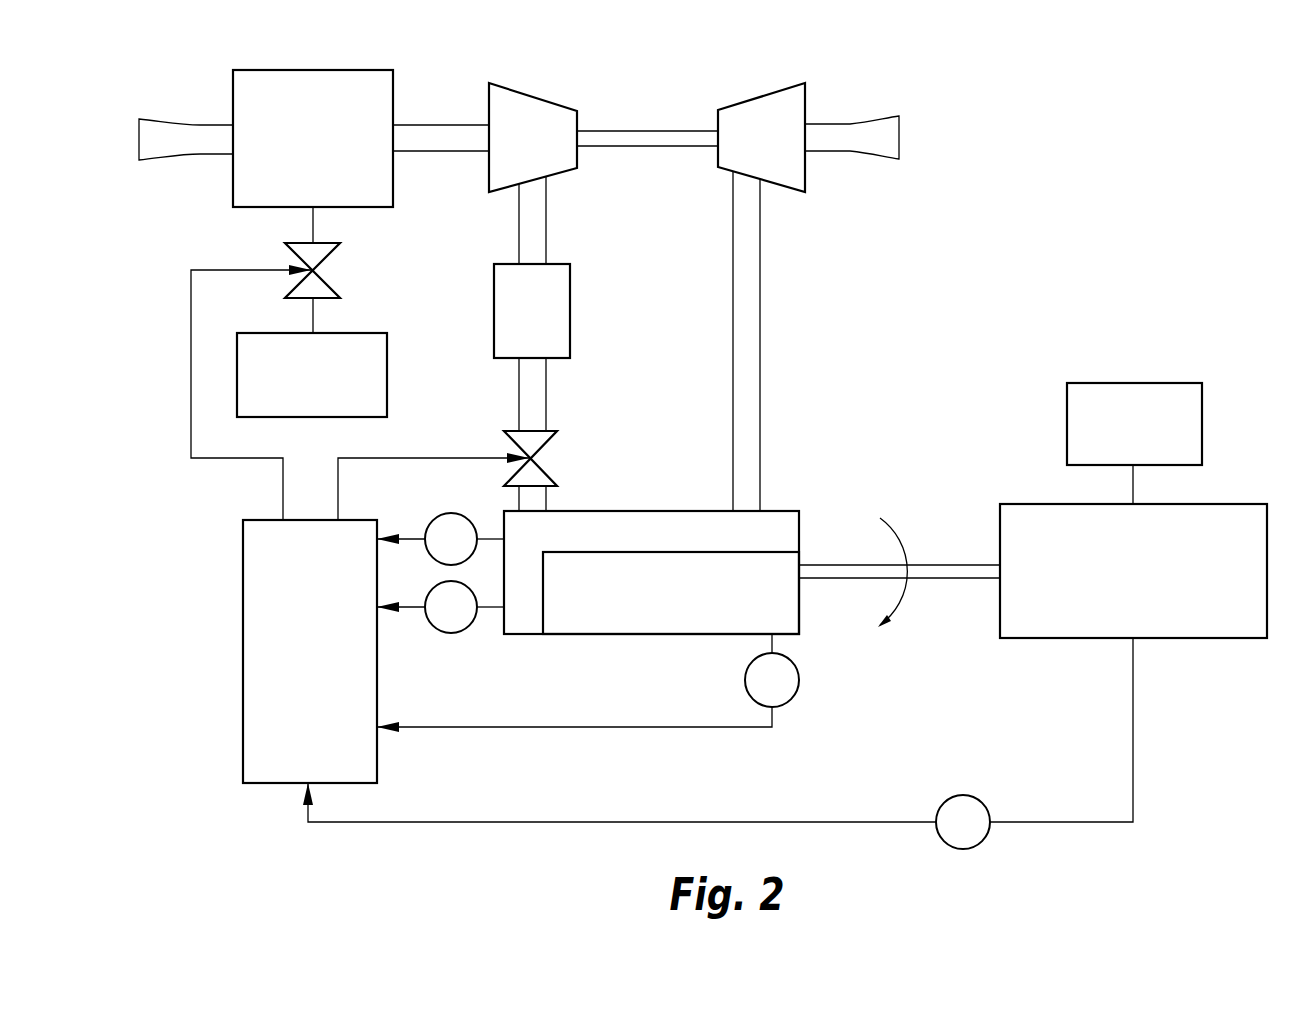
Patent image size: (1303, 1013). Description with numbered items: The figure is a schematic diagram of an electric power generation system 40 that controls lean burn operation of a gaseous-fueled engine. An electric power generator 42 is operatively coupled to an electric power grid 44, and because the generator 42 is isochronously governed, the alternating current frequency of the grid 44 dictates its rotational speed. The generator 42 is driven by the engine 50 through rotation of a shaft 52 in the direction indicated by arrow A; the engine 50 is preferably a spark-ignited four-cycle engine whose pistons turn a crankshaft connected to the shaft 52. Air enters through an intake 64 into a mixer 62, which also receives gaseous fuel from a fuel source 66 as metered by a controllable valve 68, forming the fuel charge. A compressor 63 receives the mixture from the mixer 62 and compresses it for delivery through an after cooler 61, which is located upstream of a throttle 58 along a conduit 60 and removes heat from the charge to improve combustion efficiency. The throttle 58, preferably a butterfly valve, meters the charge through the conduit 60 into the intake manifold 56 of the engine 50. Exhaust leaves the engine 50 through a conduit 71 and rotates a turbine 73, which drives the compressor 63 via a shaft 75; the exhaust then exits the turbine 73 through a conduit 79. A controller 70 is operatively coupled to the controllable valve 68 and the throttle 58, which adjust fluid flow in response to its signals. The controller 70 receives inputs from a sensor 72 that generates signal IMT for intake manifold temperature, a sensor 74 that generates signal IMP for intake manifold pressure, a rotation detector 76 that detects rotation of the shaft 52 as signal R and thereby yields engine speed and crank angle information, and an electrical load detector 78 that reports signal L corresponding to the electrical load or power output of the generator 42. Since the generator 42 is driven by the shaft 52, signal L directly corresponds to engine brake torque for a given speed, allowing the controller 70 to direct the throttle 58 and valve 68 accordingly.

The electric power generation system 40 is at (1175, 112).
The electric power generator 42 is at (1230, 624).
The electric power grid 44 is at (1067, 405).
The engine 50 is at (654, 635).
The shaft 52 is at (942, 565).
The intake manifold 56 is at (741, 543).
The throttle 58 is at (548, 470).
The conduit 60 is at (518, 396).
The after cooler 61 is at (563, 350).
The mixer 62 is at (378, 193).
The compressor 63 is at (545, 151).
The intake 64 is at (139, 120).
The fuel source 66 is at (353, 403).
The controllable valve 68 is at (333, 280).
The controller 70 is at (338, 766).
The conduit 71 is at (761, 323).
The sensor 72 is at (453, 513).
The turbine 73 is at (775, 151).
The sensor 74 is at (443, 633).
The shaft 75 is at (639, 130).
The rotation detector 76 is at (793, 702).
The electrical load detector 78 is at (975, 797).
The conduit 79 is at (899, 118).
The arrow A is at (903, 587).